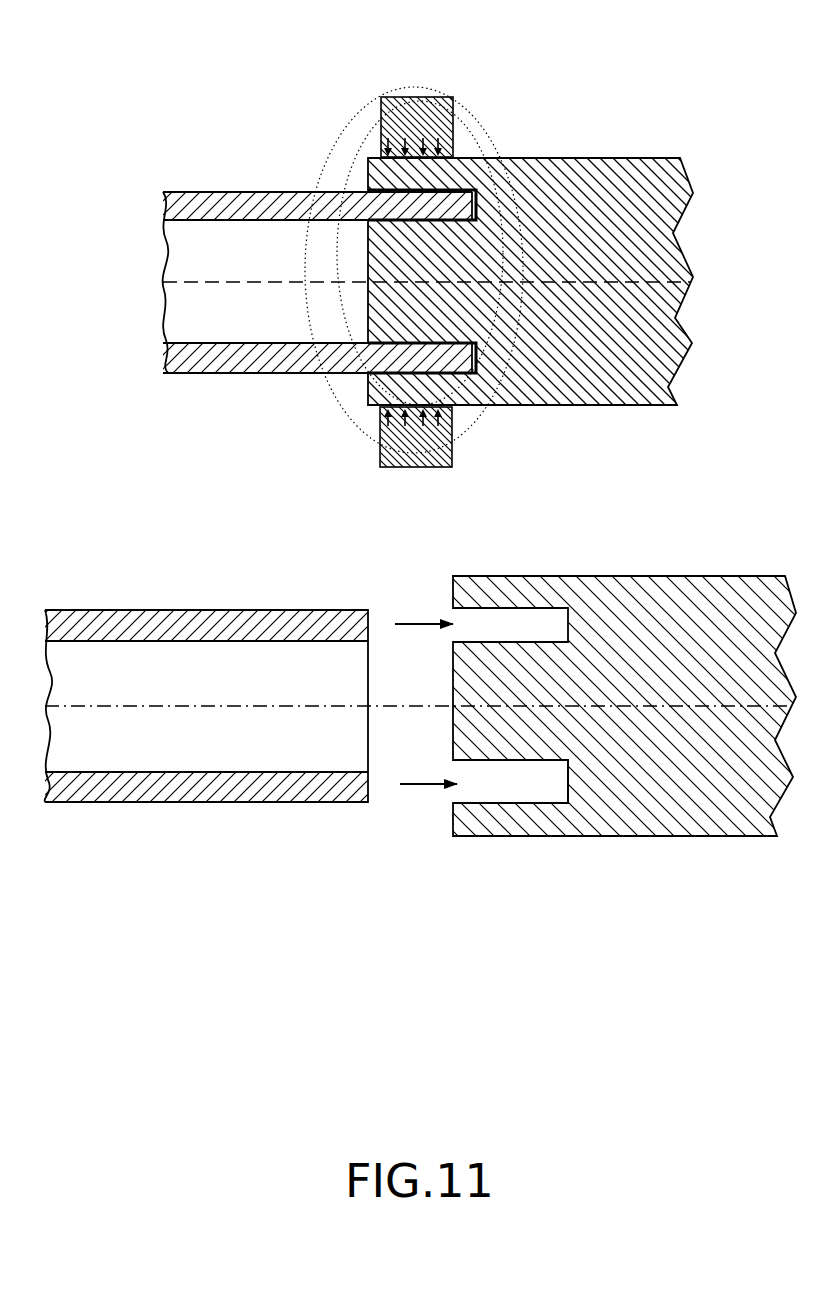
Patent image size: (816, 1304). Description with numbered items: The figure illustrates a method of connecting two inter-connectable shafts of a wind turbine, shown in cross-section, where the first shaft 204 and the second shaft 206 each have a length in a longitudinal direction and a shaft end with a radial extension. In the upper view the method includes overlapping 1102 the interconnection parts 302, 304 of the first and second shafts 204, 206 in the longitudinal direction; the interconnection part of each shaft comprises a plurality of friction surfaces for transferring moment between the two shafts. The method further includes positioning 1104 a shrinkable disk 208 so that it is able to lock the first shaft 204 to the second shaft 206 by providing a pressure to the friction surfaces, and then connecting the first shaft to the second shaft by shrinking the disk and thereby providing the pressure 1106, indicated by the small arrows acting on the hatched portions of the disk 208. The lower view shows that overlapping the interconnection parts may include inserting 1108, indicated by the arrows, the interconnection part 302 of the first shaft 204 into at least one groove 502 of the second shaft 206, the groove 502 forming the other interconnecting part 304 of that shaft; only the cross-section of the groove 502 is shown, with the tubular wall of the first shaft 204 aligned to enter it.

The first shaft 204 is at (227, 190).
The second shaft 206 is at (642, 158).
The interconnection part of the first shaft 302 is at (342, 310).
The interconnection part of the second shaft 304 is at (493, 148).
The overlapping step 1102 is at (350, 165).
The positioning step 1104 is at (467, 107).
The pressure providing step 1106 is at (380, 417).
The shrinkable disk 208 is at (452, 452).
The inserting step 1108 is at (407, 803).
The groove 502 is at (522, 782).